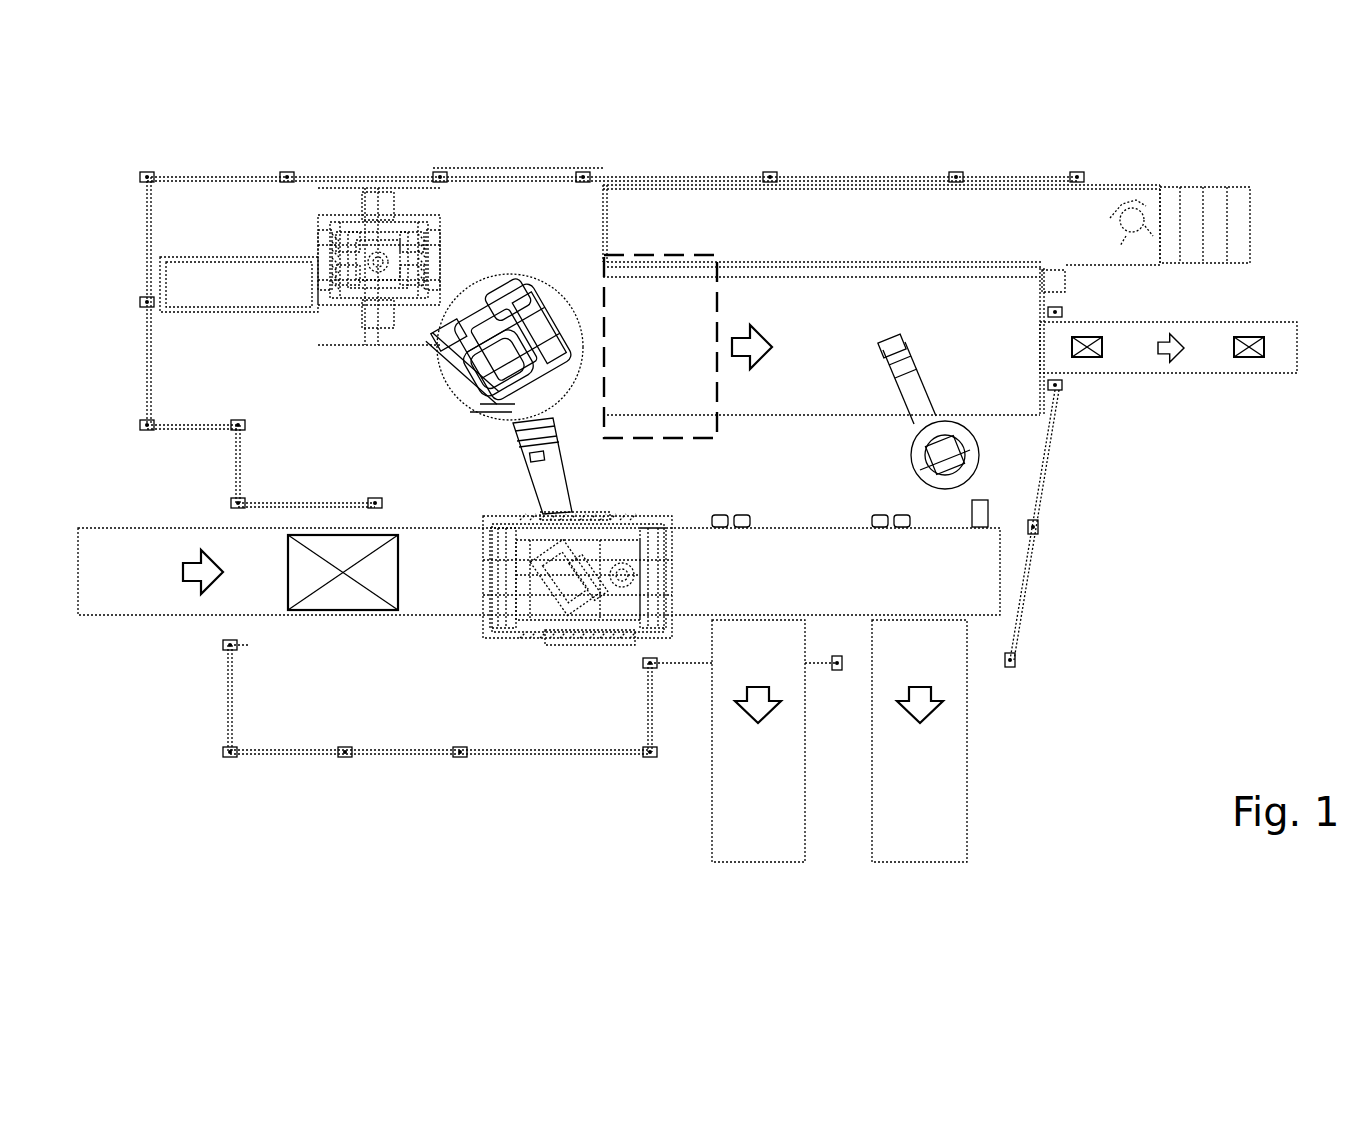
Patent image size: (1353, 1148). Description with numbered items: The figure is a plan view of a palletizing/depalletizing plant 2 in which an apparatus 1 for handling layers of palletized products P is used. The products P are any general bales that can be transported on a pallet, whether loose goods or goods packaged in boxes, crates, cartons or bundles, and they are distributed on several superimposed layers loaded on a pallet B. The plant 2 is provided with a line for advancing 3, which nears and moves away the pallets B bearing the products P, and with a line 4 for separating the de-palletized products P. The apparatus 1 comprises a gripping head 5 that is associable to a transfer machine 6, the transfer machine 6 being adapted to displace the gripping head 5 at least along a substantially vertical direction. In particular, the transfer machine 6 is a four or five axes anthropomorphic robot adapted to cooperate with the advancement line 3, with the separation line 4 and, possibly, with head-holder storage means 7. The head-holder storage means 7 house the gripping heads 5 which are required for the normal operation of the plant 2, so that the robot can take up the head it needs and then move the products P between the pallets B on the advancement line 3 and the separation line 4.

The apparatus for handling layers of palletized products 1 is at (578, 658).
The palletizing/depalletizing plant 2 is at (1128, 560).
The line for advancing 3 is at (120, 585).
The line for separating 4 is at (1162, 374).
The gripping head 5 is at (508, 644).
The transfer machine 6 is at (560, 288).
The head-holder storage means 7 is at (250, 200).
The pallet B is at (335, 597).
The product P is at (1093, 358).